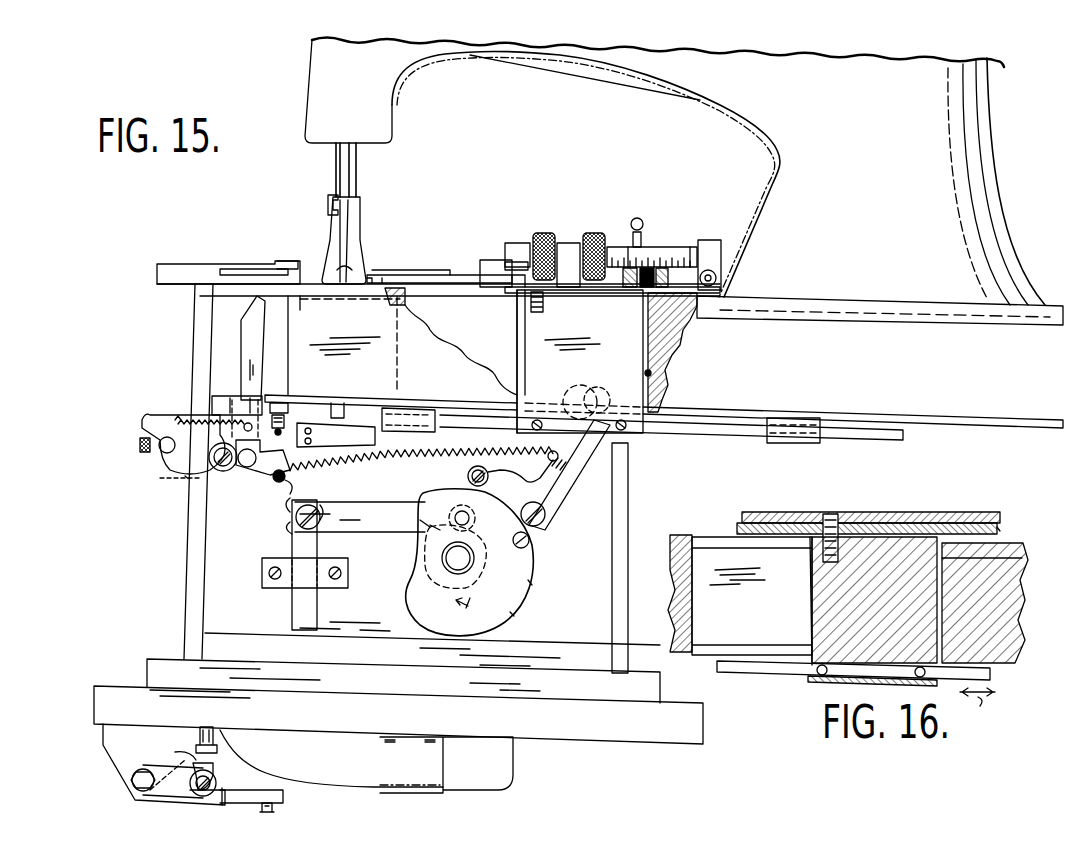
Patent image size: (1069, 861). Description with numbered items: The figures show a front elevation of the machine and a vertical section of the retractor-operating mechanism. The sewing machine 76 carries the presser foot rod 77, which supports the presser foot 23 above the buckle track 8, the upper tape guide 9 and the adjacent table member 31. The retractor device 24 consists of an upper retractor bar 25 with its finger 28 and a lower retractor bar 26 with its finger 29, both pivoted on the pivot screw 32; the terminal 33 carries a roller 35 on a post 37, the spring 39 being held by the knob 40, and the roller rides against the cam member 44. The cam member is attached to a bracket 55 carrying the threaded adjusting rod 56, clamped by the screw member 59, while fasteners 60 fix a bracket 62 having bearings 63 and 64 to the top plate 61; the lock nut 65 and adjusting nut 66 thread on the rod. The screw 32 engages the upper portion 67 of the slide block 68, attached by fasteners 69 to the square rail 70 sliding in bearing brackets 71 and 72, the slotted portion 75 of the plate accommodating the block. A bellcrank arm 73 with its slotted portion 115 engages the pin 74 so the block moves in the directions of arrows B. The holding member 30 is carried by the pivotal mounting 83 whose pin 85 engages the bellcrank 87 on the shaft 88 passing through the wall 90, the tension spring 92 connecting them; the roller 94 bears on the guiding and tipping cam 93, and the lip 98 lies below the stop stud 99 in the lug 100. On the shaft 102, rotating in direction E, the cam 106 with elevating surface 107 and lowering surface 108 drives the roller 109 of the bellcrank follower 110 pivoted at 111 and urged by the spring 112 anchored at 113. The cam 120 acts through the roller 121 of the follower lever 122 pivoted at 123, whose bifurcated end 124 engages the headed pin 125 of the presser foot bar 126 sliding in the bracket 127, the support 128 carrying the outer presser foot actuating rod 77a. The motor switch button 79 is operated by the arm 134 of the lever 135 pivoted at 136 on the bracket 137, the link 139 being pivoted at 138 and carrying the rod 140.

In FIG. 15, the buckle track 8 is at (297, 295).
In FIG. 15, the upper tape guide 9 is at (283, 264).
In FIG. 15, the presser foot 23 is at (357, 246).
In FIG. 15, the retractor device 24 is at (423, 268).
In FIG. 15, the upper retractor bar 25 is at (442, 276).
In FIG. 16, the upper retractor bar 25 is at (781, 513).
In FIG. 15, the lower retractor bar 26 is at (441, 290).
In FIG. 16, the lower retractor bar 26 is at (986, 527).
In FIG. 15, the finger 28 is at (372, 278).
In FIG. 15, the finger 29 is at (384, 296).
In FIG. 15, the holding member 30 is at (247, 341).
In FIG. 15, the table top 31 is at (191, 268).
In FIG. 15, the pivot screw 32 is at (546, 308).
In FIG. 16, the pivot screw 32 is at (839, 514).
In FIG. 15, the terminal 33 is at (640, 292).
In FIG. 15, the roller 35 is at (626, 290).
In FIG. 15, the post 37 is at (648, 242).
In FIG. 15, the spring 39 is at (645, 230).
In FIG. 15, the knob 40 is at (645, 218).
In FIG. 15, the cam member 44 is at (493, 262).
In FIG. 15, the bracket 55 is at (713, 243).
In FIG. 15, the threaded adjusting rod 56 is at (625, 252).
In FIG. 15, the screw member 59 is at (720, 278).
In FIG. 15, the fasteners 60 is at (468, 272).
In FIG. 15, the top plate 61 is at (787, 300).
In FIG. 16, the top plate 61 is at (1018, 545).
In FIG. 15, the bracket 62 is at (501, 291).
In FIG. 15, the bearing 63 is at (522, 240).
In FIG. 15, the bearing 64 is at (572, 246).
In FIG. 15, the lock nut 65 is at (595, 233).
In FIG. 15, the adjusting nut 66 is at (544, 233).
In FIG. 15, the upper portion of slide block 67 is at (520, 322).
In FIG. 16, the upper portion of slide block 67 is at (813, 565).
In FIG. 15, the slide block 68 is at (519, 362).
In FIG. 16, the slide block 68 is at (811, 615).
In FIG. 15, the fasteners 69 is at (537, 420).
In FIG. 16, the fasteners 69 is at (819, 680).
In FIG. 15, the square rail 70 is at (693, 428).
In FIG. 16, the square rail 70 is at (749, 676).
In FIG. 15, the bearing bracket 71 is at (433, 432).
In FIG. 15, the bearing bracket 72 is at (807, 445).
In FIG. 15, the bellcrank arm 73 is at (576, 476).
In FIG. 15, the pin 74 is at (585, 405).
In FIG. 15, the slotted portion 75 is at (656, 378).
In FIG. 16, the slotted portion 75 is at (701, 538).
In FIG. 15, the sewing machine 76 is at (700, 96).
In FIG. 15, the presser foot rod 77 is at (357, 188).
In FIG. 15, the outer presser foot actuating rod 77a is at (361, 404).
In FIG. 15, the motor switch button 79 is at (278, 782).
In FIG. 15, the pivotal mounting 83 is at (277, 480).
In FIG. 15, the pin 85 is at (247, 470).
In FIG. 15, the bellcrank 87 is at (163, 456).
In FIG. 15, the shaft 88 is at (164, 430).
In FIG. 15, the wall 90 is at (196, 365).
In FIG. 15, the tension spring 92 is at (233, 410).
In FIG. 15, the guiding and tipping cam 93 is at (199, 415).
In FIG. 15, the roller 94 is at (223, 472).
In FIG. 15, the lip 98 is at (279, 460).
In FIG. 15, the stop stud 99 is at (283, 409).
In FIG. 15, the lug 100 is at (285, 423).
In FIG. 15, the shaft 102 is at (478, 565).
In FIG. 15, the cam 106 is at (531, 590).
In FIG. 15, the elevating surface 107 is at (513, 612).
In FIG. 15, the lowering surface 108 is at (411, 590).
In FIG. 15, the roller 109 is at (467, 478).
In FIG. 15, the bellcrank follower 110 is at (570, 492).
In FIG. 15, the pivot 111 is at (541, 510).
In FIG. 15, the spring 112 is at (506, 452).
In FIG. 15, the anchor 113 is at (289, 492).
In FIG. 15, the slotted portion 115 is at (600, 392).
In FIG. 15, the cam 120 is at (426, 548).
In FIG. 15, the roller 121 is at (452, 518).
In FIG. 15, the follower lever 122 is at (381, 508).
In FIG. 15, the pivot 123 is at (531, 541).
In FIG. 15, the bifurcated end 124 is at (297, 530).
In FIG. 15, the headed pin 125 is at (325, 528).
In FIG. 15, the presser foot bar 126 is at (293, 624).
In FIG. 15, the bracket 127 is at (263, 574).
In FIG. 15, the support 128 is at (379, 442).
In FIG. 15, the arm 134 is at (287, 805).
In FIG. 15, the lever 135 is at (167, 795).
In FIG. 15, the pivot 136 is at (131, 783).
In FIG. 15, the bracket 137 is at (113, 752).
In FIG. 15, the pivot connection 138 is at (217, 795).
In FIG. 15, the link 139 is at (199, 762).
In FIG. 15, the rod 140 is at (223, 730).
In FIG. 15, the direction of shaft rotation E is at (469, 610).
In FIG. 16, the direction of block movement B is at (977, 703).